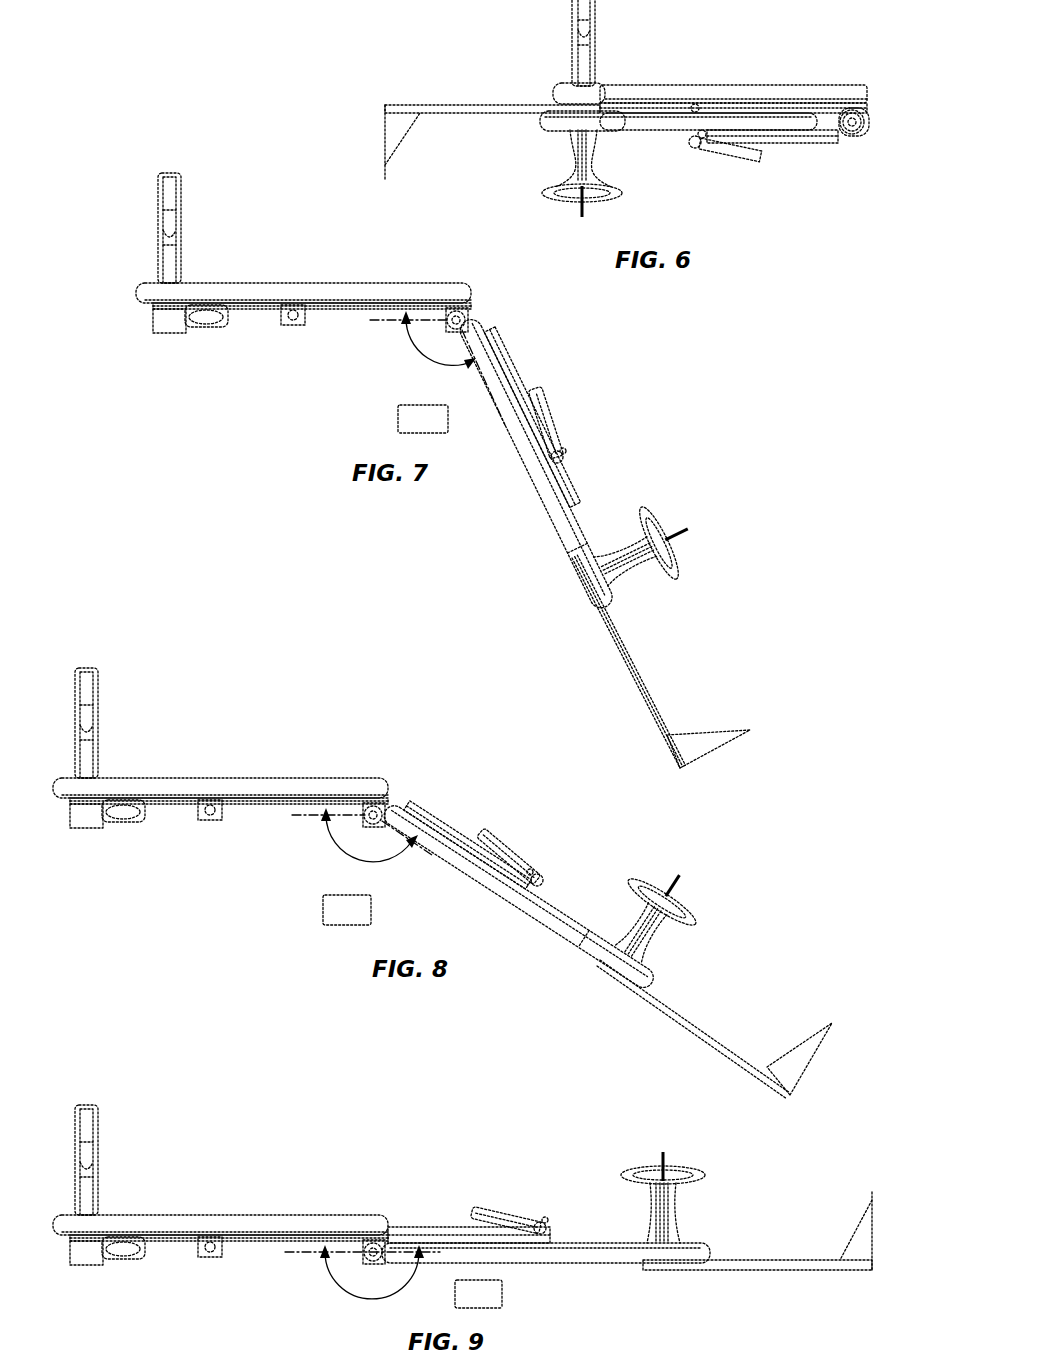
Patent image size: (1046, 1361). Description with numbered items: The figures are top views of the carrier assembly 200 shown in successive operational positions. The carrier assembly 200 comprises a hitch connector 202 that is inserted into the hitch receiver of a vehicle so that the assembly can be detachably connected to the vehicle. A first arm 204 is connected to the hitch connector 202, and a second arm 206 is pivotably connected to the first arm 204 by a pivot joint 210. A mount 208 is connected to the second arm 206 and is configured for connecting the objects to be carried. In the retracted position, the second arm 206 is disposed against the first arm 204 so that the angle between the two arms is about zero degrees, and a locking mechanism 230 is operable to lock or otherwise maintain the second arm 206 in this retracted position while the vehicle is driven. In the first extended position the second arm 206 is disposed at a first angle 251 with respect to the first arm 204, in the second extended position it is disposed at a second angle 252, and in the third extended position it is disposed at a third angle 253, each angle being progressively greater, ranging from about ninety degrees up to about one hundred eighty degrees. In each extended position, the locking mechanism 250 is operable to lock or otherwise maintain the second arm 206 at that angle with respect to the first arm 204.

In FIG. 6, the carrier assembly 200 is at (427, 30).
In FIG. 7, the carrier assembly 200 is at (96, 182).
In FIG. 8, the carrier assembly 200 is at (91, 631).
In FIG. 9, the carrier assembly 200 is at (91, 1064).
In FIG. 6, the hitch connector 202 is at (570, 8).
In FIG. 7, the hitch connector 202 is at (157, 205).
In FIG. 8, the hitch connector 202 is at (98, 698).
In FIG. 9, the hitch connector 202 is at (98, 1135).
In FIG. 6, the first arm 204 is at (738, 84).
In FIG. 7, the first arm 204 is at (335, 284).
In FIG. 8, the first arm 204 is at (228, 778).
In FIG. 9, the first arm 204 is at (225, 1214).
In FIG. 6, the second arm 206 is at (638, 130).
In FIG. 7, the second arm 206 is at (545, 508).
In FIG. 8, the second arm 206 is at (546, 936).
In FIG. 9, the second arm 206 is at (565, 1243).
In FIG. 6, the mount 208 is at (570, 155).
In FIG. 7, the mount 208 is at (645, 507).
In FIG. 8, the mount 208 is at (645, 880).
In FIG. 9, the mount 208 is at (676, 1165).
In FIG. 6, the pivot joint 210 is at (855, 132).
In FIG. 7, the pivot joint 210 is at (442, 321).
In FIG. 8, the pivot joint 210 is at (362, 818).
In FIG. 9, the pivot joint 210 is at (357, 1256).
In FIG. 6, the locking mechanism 230 is at (695, 148).
In FIG. 7, the locking mechanism 230 is at (560, 432).
In FIG. 8, the locking mechanism 230 is at (540, 875).
In FIG. 9, the locking mechanism 230 is at (516, 1212).
In FIG. 6, the locking mechanism 250 is at (850, 134).
In FIG. 7, the locking mechanism 250 is at (427, 358).
In FIG. 8, the locking mechanism 250 is at (349, 856).
In FIG. 9, the locking mechanism 250 is at (348, 1293).
In FIG. 7, the first angle 251 is at (468, 368).
In FIG. 8, the second angle 252 is at (403, 848).
In FIG. 9, the third angle 253 is at (423, 1262).